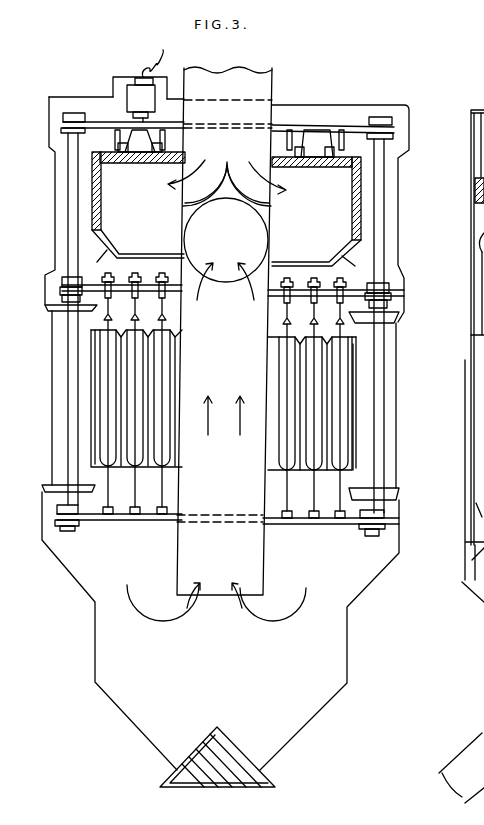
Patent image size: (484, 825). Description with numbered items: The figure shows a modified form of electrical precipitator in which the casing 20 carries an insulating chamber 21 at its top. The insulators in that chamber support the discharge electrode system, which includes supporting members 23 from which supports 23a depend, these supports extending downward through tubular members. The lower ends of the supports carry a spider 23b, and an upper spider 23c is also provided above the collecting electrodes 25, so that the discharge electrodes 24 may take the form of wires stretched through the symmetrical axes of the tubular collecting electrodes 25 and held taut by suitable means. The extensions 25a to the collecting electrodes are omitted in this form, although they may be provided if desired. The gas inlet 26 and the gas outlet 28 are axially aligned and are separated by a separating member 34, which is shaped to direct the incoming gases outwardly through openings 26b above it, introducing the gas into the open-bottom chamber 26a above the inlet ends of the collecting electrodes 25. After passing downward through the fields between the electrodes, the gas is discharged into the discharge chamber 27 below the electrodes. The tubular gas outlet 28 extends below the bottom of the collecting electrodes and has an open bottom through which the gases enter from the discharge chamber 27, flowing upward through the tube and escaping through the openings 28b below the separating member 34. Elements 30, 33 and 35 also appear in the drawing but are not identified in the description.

The casing 20 is at (398, 379).
The insulating chamber 21 is at (345, 113).
The supporting members 23 is at (398, 133).
The supports 23a is at (68, 378).
The spider 23b is at (389, 523).
The upper spider 23c is at (389, 296).
The discharge electrodes 24 is at (158, 493).
The collecting electrodes 25 is at (148, 432).
The extensions 25a is at (483, 484).
The gas inlet 26 is at (256, 82).
The chamber 26a is at (150, 217).
The openings 26b is at (320, 188).
The discharge chamber 27 is at (216, 685).
The gas outlet 28 is at (224, 331).
The openings 28b is at (237, 237).
The valve 30 is at (146, 56).
The outlet 33 is at (482, 735).
The separating member 34 is at (233, 165).
The partition 35 is at (472, 440).